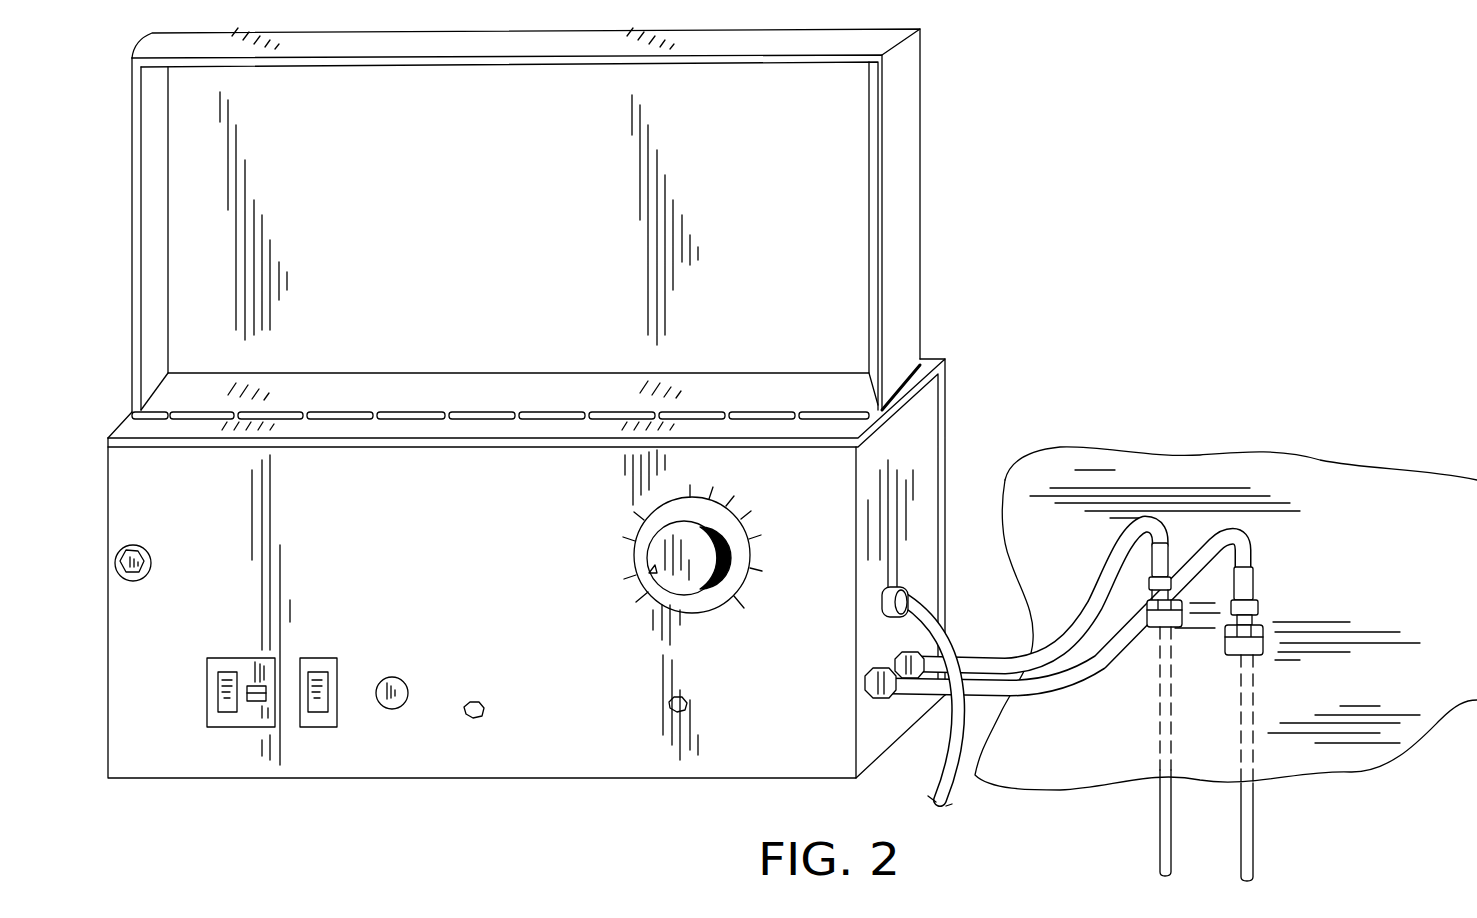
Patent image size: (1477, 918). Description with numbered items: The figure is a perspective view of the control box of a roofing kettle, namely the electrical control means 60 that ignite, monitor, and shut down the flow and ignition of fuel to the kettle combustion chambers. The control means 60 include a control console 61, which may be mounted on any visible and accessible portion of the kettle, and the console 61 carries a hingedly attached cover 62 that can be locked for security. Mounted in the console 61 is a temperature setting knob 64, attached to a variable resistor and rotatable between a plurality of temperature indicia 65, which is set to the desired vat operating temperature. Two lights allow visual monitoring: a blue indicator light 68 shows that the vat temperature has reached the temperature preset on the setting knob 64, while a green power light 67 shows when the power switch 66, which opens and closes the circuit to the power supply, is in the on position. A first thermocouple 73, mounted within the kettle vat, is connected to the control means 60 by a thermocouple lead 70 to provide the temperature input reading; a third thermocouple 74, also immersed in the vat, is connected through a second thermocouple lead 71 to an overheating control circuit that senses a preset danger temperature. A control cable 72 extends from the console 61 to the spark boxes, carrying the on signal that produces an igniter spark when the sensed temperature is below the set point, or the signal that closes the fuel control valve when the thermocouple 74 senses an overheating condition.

The electrical control means 60 is at (573, 549).
The control console 61 is at (945, 424).
The cover 62 is at (922, 162).
The temperature setting knob 64 is at (703, 548).
The temperature indicia 65 is at (752, 553).
The power switch 66 is at (253, 686).
The green power light 67 is at (227, 672).
The blue indicator light 68 is at (326, 670).
The thermocouple lead 70 is at (1114, 636).
The second thermocouple lead 71 is at (1100, 576).
The control cable 72 is at (950, 785).
The first thermocouple 73 is at (1254, 818).
The third thermocouple 74 is at (1172, 818).